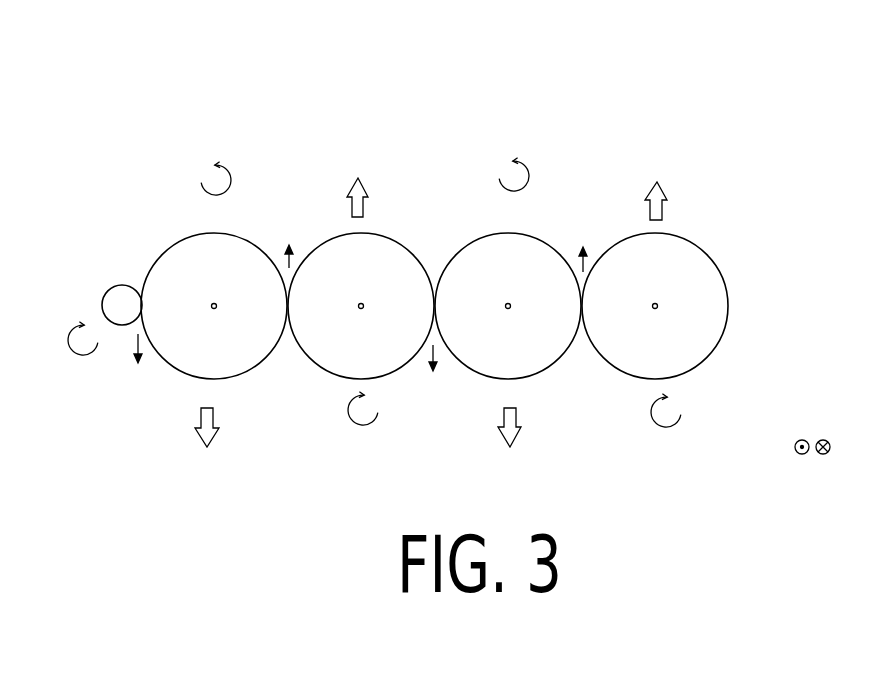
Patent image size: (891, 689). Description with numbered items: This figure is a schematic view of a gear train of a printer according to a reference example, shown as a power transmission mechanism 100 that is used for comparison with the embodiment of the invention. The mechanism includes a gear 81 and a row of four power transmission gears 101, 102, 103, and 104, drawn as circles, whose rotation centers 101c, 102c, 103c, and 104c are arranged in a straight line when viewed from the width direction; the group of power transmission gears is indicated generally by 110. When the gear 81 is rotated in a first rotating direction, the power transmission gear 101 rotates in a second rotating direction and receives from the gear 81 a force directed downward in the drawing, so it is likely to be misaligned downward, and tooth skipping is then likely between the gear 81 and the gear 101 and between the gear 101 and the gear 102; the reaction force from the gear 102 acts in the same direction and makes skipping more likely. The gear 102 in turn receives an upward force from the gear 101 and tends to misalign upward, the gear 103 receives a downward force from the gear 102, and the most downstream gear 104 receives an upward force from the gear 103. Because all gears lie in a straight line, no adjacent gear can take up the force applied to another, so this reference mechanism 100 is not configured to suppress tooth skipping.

The power transmission mechanism 100 is at (748, 110).
The image forming unit / roller group 110 is at (568, 127).
The gear 81 is at (121, 285).
The power transmission gear 101 is at (177, 241).
The rotation center 101c is at (216, 302).
The power transmission gear 102 is at (330, 375).
The rotation center 102c is at (362, 302).
The power transmission gear 103 is at (482, 238).
The rotation center 103c is at (509, 302).
The power transmission gear 104 is at (630, 378).
The rotation center 104c is at (656, 302).